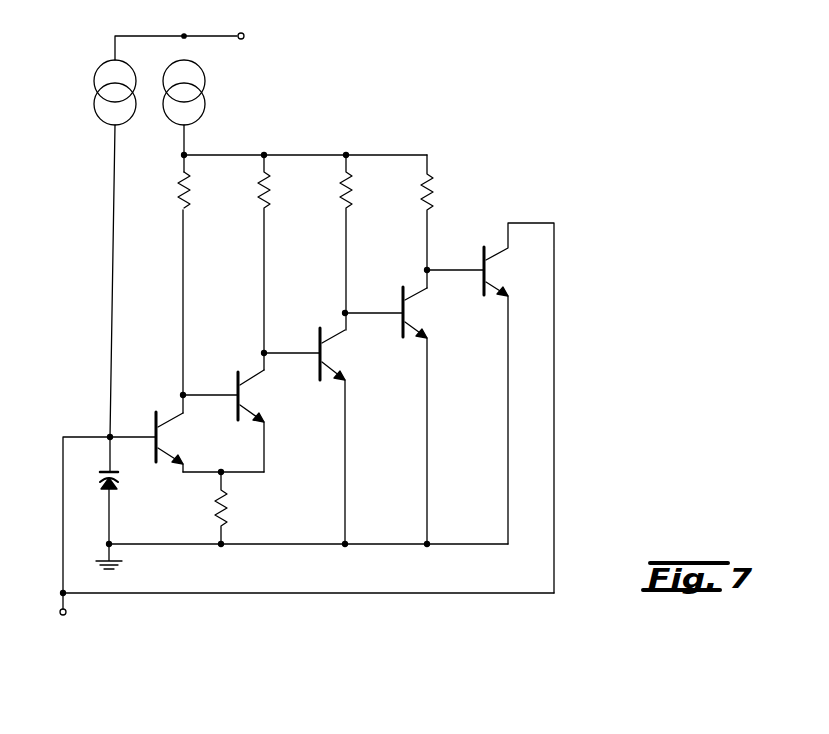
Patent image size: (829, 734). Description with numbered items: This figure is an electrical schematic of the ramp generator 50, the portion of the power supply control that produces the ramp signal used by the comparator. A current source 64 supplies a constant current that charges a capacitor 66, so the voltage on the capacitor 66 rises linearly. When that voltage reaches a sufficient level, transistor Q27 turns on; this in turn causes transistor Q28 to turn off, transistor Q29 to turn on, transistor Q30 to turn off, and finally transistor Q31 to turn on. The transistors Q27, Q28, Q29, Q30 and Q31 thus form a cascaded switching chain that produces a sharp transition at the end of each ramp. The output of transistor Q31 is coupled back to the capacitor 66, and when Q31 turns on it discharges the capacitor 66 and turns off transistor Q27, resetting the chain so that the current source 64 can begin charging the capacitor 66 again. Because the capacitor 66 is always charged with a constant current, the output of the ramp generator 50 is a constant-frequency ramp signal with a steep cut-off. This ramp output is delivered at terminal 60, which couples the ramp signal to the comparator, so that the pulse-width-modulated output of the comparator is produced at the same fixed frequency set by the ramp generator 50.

The ramp generator 50 is at (308, 311).
The terminal 60 is at (59, 607).
The current source 64 is at (103, 108).
The capacitor 66 is at (105, 484).
The transistor Q27 is at (162, 442).
The transistor Q28 is at (242, 421).
The transistor Q29 is at (323, 436).
The transistor Q30 is at (404, 415).
The transistor Q31 is at (490, 408).